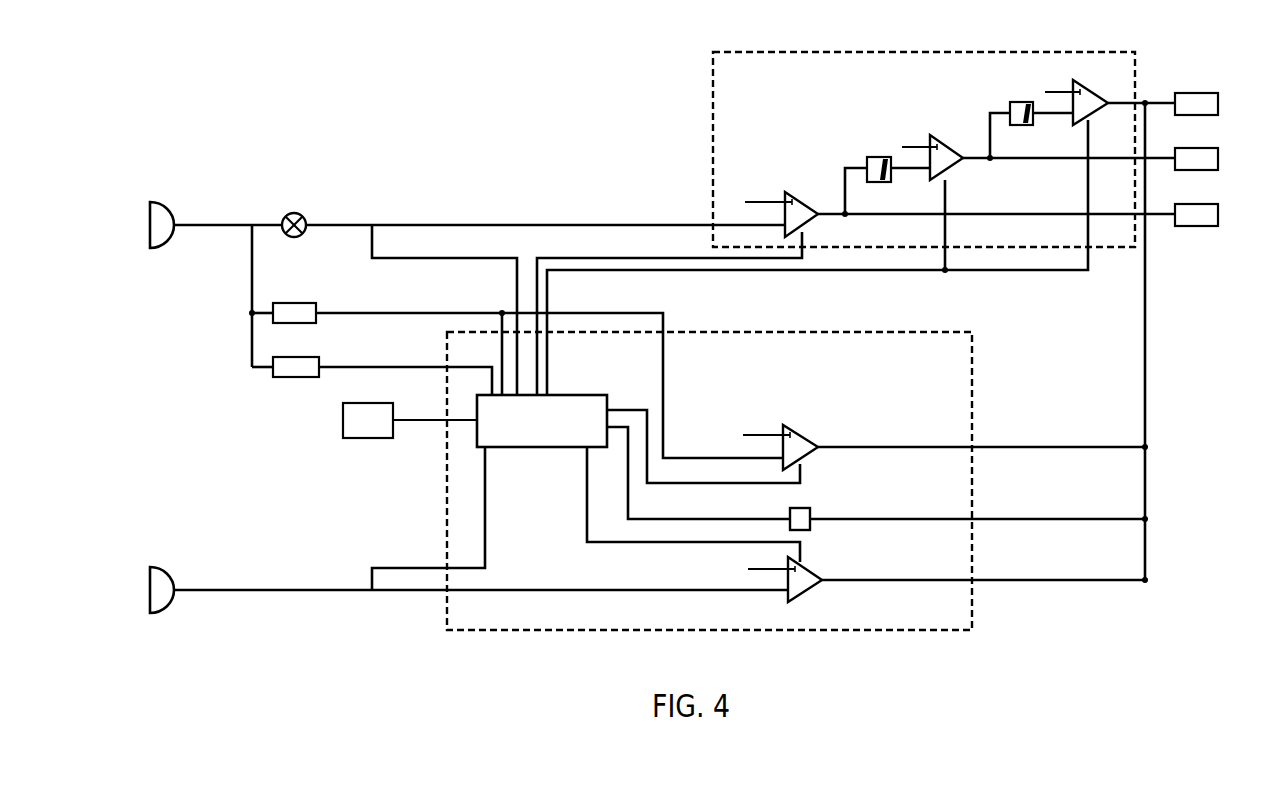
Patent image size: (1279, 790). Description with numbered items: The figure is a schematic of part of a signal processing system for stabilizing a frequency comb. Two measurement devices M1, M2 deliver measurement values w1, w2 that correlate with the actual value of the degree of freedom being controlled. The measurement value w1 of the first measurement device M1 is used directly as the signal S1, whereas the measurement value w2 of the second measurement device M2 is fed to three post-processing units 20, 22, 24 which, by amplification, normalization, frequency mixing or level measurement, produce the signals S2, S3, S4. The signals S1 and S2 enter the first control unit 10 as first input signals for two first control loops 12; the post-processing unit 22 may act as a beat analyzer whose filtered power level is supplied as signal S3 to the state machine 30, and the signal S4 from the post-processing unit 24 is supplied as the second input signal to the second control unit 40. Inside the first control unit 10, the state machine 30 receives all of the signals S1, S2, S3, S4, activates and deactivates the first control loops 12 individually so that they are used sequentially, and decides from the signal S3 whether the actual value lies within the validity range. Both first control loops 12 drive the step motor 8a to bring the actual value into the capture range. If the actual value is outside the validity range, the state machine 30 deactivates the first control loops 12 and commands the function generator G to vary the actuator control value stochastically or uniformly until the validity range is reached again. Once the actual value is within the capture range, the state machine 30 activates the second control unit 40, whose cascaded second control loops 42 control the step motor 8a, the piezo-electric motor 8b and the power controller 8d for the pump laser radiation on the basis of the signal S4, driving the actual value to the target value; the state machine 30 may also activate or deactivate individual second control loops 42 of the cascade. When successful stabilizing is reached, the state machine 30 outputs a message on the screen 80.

The first measurement device M1 is at (169, 567).
The second measurement device M2 is at (169, 203).
The measurement value w1 is at (197, 595).
The measurement value w2 is at (197, 229).
The signal S1 is at (559, 519).
The signal S2 is at (549, 374).
The signal S3 is at (405, 369).
The signal S4 is at (545, 298).
The post-processing unit 20 is at (283, 303).
The post-processing unit 22 is at (283, 378).
The post-processing unit 24 is at (293, 212).
The state machine 30 is at (553, 433).
The screen 80 is at (381, 433).
The first control unit 10 is at (926, 381).
The second control unit 40 is at (780, 104).
The second control loop 42 is at (805, 199).
The first control loop 12 is at (815, 447).
The function generator G is at (812, 509).
The step motor 8a is at (1218, 104).
The piezo-electric motor 8b is at (1218, 159).
The power controller 8d is at (1218, 215).